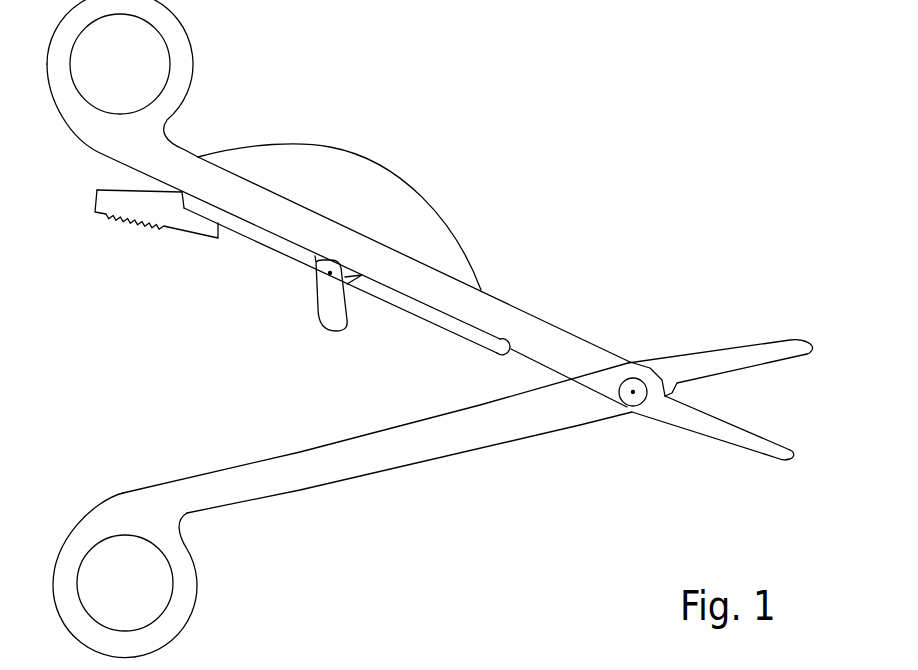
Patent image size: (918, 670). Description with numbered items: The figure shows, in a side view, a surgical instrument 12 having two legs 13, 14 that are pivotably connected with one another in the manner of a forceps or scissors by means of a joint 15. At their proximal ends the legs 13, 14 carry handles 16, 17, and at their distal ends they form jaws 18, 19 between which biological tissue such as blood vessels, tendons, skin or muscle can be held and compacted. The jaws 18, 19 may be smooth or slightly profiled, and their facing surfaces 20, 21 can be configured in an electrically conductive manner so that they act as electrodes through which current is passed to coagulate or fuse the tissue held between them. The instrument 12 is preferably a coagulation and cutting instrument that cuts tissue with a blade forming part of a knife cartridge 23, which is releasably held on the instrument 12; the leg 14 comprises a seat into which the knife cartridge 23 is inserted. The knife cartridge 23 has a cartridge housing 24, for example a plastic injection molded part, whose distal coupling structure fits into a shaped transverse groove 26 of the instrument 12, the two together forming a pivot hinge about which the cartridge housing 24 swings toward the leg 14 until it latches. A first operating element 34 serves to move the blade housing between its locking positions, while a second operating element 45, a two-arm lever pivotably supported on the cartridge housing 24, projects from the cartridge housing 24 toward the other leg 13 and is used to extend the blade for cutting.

The surgical instrument 12 is at (549, 138).
The leg 13 is at (463, 438).
The leg 14 is at (522, 320).
The joint 15 is at (634, 362).
The handle 16 is at (187, 600).
The handle 17 is at (173, 32).
The jaw 18 is at (758, 448).
The jaw 19 is at (768, 340).
The surface 20 is at (765, 442).
The surface 21 is at (773, 364).
The knife cartridge 23 is at (402, 152).
The cartridge housing 24 is at (340, 162).
The transverse groove 26 is at (506, 328).
The first operating element 34 is at (138, 212).
The second operating element 45 is at (328, 312).